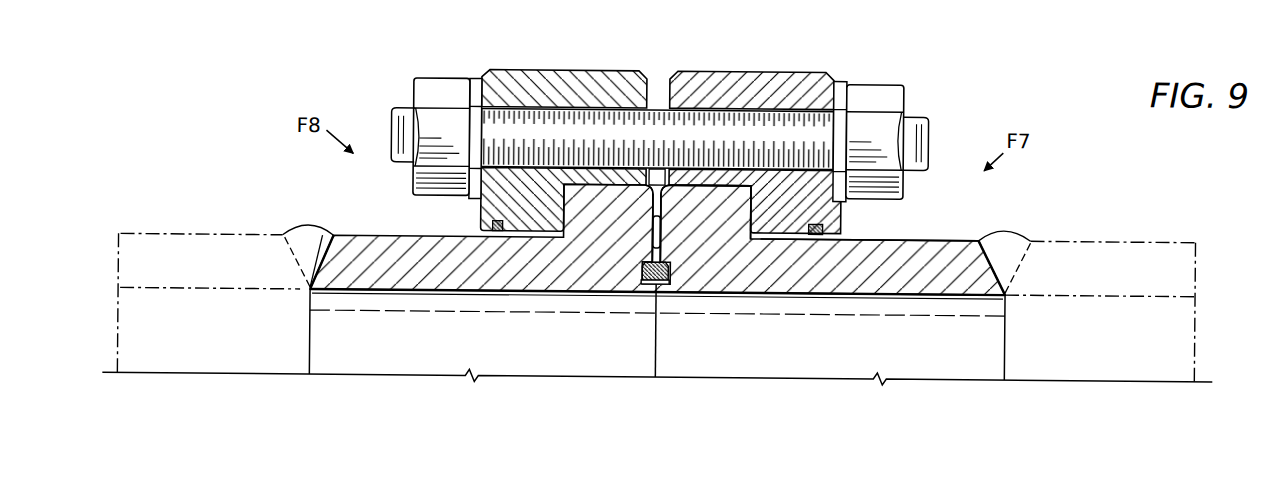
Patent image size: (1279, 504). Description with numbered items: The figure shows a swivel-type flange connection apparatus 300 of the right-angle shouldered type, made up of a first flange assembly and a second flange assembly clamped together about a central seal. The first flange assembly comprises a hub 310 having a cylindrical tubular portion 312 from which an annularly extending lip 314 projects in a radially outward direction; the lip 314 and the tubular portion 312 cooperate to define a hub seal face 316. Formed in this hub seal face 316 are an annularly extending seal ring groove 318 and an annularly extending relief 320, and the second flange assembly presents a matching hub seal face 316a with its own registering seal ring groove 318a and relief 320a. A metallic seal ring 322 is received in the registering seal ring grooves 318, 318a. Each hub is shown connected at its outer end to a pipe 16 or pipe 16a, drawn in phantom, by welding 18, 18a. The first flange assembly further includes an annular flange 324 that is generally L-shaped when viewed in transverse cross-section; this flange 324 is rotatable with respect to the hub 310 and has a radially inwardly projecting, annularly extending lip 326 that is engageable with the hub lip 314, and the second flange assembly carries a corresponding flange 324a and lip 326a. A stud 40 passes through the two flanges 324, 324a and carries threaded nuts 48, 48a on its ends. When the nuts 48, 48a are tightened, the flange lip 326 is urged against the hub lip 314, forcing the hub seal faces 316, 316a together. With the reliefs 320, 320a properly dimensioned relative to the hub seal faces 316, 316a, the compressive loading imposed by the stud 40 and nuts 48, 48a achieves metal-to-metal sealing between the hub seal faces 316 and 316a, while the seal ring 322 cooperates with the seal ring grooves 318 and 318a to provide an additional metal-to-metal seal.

The pipe 16 is at (1120, 242).
The rail section 16a is at (172, 242).
The welding 18 is at (1008, 234).
The weld 18a is at (302, 237).
The stud 40 is at (500, 110).
The threaded nut 48 is at (880, 85).
The threaded nut 48a is at (428, 90).
The connection apparatus 300 is at (716, 189).
The hub 310 is at (937, 240).
The cylindrical tubular portion 312 is at (903, 292).
The lip 314 is at (708, 190).
The hub seal face 316 is at (640, 190).
The hub seal face 316a is at (672, 190).
The seal ring groove 318 is at (670, 283).
The seal ring groove 318a is at (642, 280).
The relief 320 is at (661, 240).
The relief 320a is at (651, 232).
The metallic seal ring 322 is at (652, 282).
The annular flange 324 is at (797, 71).
The clamp block 324a is at (558, 71).
The lip 326 is at (803, 236).
The seal 326a is at (480, 213).